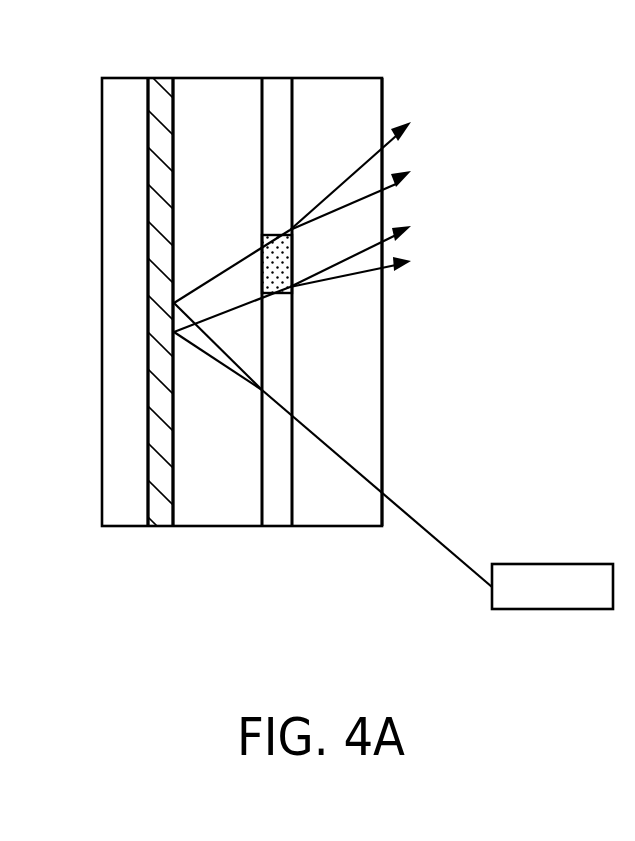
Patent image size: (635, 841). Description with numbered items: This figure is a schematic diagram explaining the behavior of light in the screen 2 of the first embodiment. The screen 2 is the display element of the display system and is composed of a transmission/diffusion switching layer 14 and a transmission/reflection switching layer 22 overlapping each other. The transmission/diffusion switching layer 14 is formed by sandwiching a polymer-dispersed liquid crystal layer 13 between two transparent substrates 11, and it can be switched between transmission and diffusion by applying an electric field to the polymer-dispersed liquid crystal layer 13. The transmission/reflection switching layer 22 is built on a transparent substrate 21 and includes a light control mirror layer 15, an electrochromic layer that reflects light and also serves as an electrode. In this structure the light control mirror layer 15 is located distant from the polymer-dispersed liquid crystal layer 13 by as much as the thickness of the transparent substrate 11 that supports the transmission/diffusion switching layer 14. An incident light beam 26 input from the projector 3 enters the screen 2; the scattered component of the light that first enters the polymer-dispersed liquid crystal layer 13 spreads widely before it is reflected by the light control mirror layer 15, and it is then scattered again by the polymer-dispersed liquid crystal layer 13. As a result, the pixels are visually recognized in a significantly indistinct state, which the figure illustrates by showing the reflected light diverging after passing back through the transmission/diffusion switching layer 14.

The screen 2 is at (102, 595).
The projector 3 is at (573, 574).
The transparent substrate 11 is at (217, 88).
The polymer-dispersed liquid crystal layer 13 is at (276, 87).
The transmission/diffusion switching layer 14 is at (382, 537).
The light control mirror layer 15 is at (162, 89).
The transparent substrate 21 is at (118, 89).
The transmission/reflection switching layer 22 is at (102, 537).
The incident light beam 26 is at (442, 542).